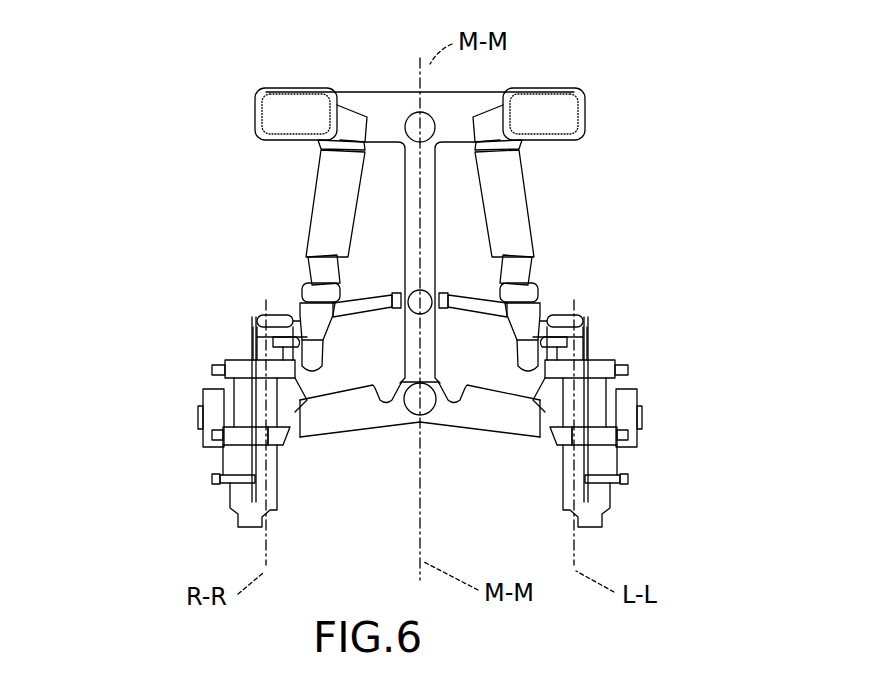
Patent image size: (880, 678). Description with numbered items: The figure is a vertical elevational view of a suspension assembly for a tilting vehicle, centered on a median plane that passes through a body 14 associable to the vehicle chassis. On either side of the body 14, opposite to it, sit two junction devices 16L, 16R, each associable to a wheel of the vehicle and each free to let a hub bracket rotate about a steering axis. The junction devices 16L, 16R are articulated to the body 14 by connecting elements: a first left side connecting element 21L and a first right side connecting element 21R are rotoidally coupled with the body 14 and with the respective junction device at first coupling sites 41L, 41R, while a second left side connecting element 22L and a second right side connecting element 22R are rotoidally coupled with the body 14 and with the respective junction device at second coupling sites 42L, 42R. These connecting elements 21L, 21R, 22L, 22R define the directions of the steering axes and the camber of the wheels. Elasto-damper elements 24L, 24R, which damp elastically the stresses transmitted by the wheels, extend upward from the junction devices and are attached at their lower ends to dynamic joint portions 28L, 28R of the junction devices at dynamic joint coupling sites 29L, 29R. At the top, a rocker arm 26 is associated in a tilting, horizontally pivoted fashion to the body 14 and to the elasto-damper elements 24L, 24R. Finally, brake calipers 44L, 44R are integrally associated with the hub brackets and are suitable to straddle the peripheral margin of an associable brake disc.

The body 14 is at (408, 172).
The rocker arm 26 is at (498, 120).
The right elasto-damper element 24R is at (328, 188).
The left elasto-damper element 24L is at (507, 197).
The second right side connecting element 22R is at (298, 318).
The second left side connecting element 22L is at (545, 310).
The second right side coupling site 42R is at (255, 320).
The second left side coupling site 42L is at (585, 320).
The right dynamic joint coupling site 29R is at (227, 362).
The left dynamic joint coupling site 29L is at (612, 362).
The right dynamic joint portion 28R is at (300, 400).
The left dynamic joint portion 28L is at (540, 400).
The first right side coupling site 41R is at (200, 427).
The first left side coupling site 41L is at (637, 428).
The right brake caliper 44R is at (228, 508).
The left brake caliper 44L is at (607, 510).
The first right side connecting element 21R is at (348, 424).
The first left side connecting element 21L is at (477, 413).
The right junction device 16R is at (305, 418).
The left junction device 16L is at (530, 388).